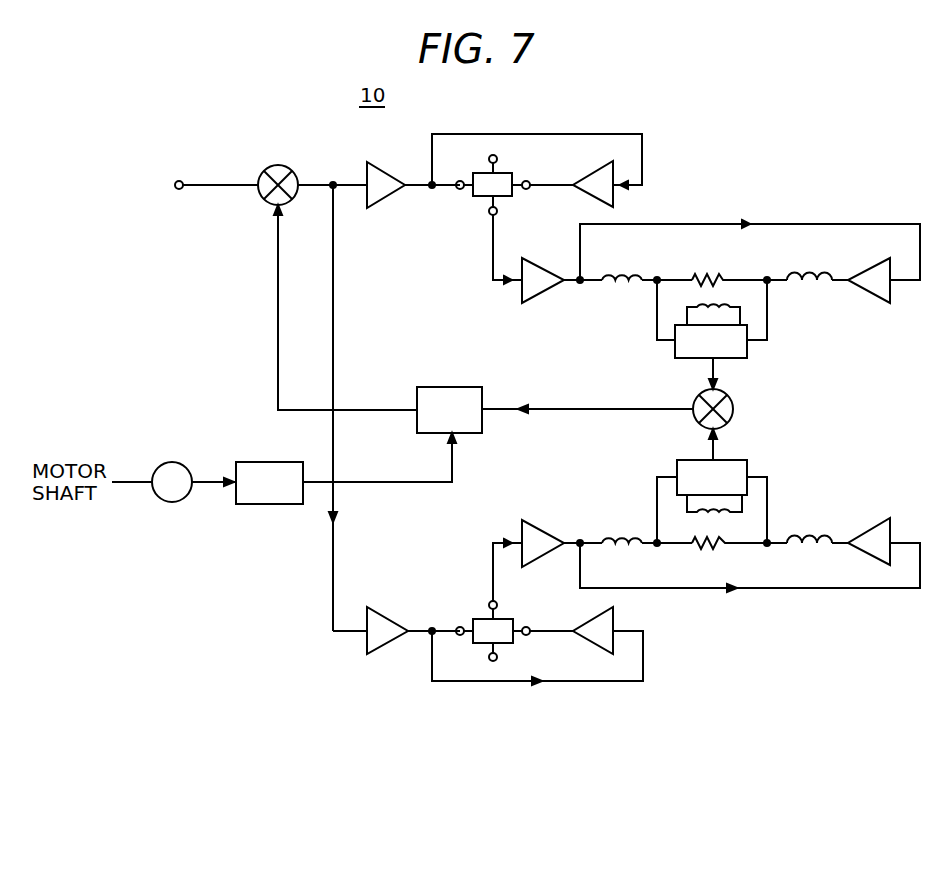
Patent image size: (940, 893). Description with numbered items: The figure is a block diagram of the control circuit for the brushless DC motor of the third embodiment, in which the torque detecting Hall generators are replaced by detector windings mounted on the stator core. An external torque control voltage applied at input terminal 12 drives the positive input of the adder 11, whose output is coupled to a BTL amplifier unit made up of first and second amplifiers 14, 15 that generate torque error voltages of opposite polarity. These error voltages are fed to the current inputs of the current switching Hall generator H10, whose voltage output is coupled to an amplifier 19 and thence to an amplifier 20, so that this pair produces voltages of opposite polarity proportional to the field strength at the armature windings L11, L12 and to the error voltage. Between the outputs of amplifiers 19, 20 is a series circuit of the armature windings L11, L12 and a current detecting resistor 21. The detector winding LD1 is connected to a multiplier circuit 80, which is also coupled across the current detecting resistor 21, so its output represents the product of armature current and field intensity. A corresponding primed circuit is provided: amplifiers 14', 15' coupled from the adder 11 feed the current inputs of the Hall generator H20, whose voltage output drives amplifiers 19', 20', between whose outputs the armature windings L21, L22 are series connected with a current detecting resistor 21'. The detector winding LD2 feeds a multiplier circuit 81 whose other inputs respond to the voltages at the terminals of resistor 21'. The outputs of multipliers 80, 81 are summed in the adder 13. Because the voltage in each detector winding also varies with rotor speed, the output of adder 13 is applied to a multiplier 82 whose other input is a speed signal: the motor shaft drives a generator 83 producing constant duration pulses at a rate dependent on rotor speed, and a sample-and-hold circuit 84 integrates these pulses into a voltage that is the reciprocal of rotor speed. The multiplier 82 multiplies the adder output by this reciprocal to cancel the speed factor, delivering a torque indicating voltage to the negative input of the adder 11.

The input terminal 12 is at (181, 181).
The adder 11 is at (290, 170).
The first amplifier 14 is at (413, 169).
The current switching Hall generator H10 is at (473, 174).
The second amplifier 15 is at (537, 170).
The amplifier 19 is at (562, 268).
The armature winding L11 is at (622, 272).
The current detecting resistor 21 is at (729, 262).
The armature winding L12 is at (806, 272).
The amplifier 20 is at (750, 261).
The detector winding LD1 is at (695, 302).
The multiplier circuit 80 is at (748, 353).
The second adder 13 is at (735, 410).
The multiplier circuit 81 is at (747, 463).
The detector winding LD2 is at (702, 520).
The multiplier 82 is at (458, 387).
The generator 83 is at (172, 462).
The sample-and-hold circuit 84 is at (270, 462).
The amplifier 19' is at (562, 535).
The armature winding L21 is at (618, 536).
The current detecting resistor 21' is at (731, 559).
The armature winding L22 is at (808, 536).
The amplifier 20' is at (750, 548).
The amplifier 14' is at (413, 619).
The current switching Hall generator H20 is at (513, 619).
The amplifier 15' is at (542, 640).